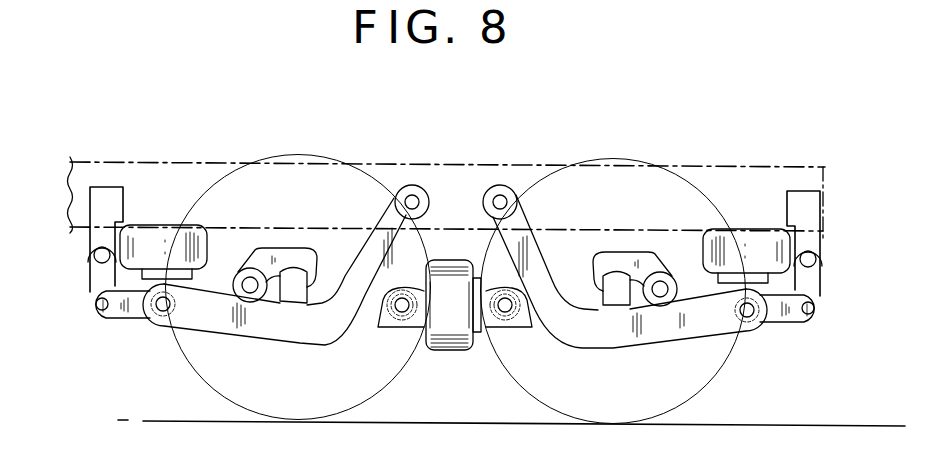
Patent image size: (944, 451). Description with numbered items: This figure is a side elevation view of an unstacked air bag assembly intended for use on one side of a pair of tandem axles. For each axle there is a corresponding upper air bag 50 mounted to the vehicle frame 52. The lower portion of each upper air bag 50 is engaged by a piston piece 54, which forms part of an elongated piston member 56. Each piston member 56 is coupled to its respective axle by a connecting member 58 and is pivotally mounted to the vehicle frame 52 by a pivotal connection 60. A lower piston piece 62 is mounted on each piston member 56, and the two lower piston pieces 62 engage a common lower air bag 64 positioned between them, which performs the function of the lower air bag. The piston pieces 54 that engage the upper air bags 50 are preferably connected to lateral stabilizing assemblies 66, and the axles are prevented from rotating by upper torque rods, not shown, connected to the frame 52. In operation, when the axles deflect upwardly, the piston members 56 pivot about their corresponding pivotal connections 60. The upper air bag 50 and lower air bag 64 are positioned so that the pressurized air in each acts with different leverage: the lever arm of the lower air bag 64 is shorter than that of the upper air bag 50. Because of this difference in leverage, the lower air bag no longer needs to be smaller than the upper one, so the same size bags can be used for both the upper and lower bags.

The upper air bag 50 is at (156, 236).
The vehicle frame 52 is at (778, 163).
The piston piece 54 is at (140, 278).
The piston member 56 is at (312, 337).
The connecting member 58 is at (281, 262).
The pivotal connection 60 is at (497, 197).
The lower piston piece 62 is at (421, 318).
The lower air bag 64 is at (445, 345).
The lateral stabilizing assembly 66 is at (100, 262).